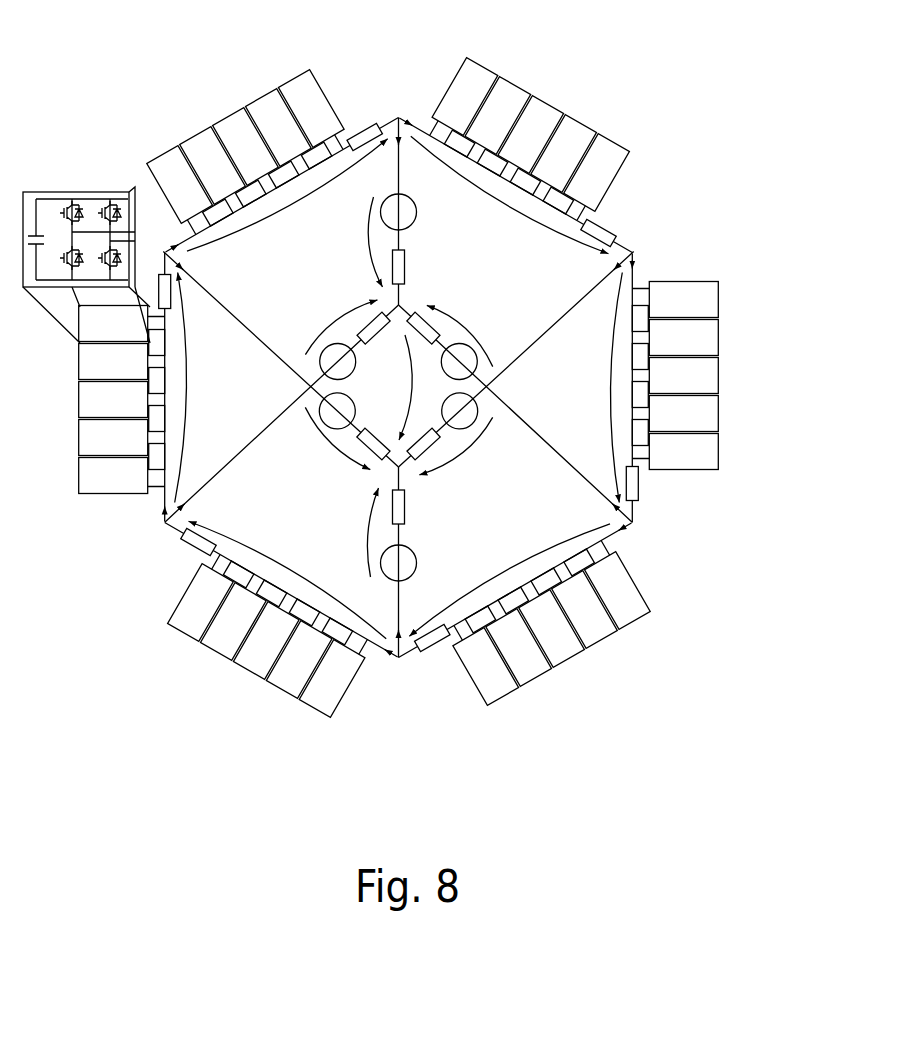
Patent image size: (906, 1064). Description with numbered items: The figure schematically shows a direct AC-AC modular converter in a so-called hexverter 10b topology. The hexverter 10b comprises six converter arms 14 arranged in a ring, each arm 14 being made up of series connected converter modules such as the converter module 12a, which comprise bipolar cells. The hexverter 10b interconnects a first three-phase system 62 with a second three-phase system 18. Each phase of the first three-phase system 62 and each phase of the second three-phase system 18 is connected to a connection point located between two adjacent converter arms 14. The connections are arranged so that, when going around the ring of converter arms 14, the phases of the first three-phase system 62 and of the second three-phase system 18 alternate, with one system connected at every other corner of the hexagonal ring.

The hexverter 10b is at (727, 77).
The converter arm 14 is at (338, 68).
The converter module 12a is at (82, 191).
The first three-phase system 62 is at (423, 291).
The second three-phase system 18 is at (420, 492).